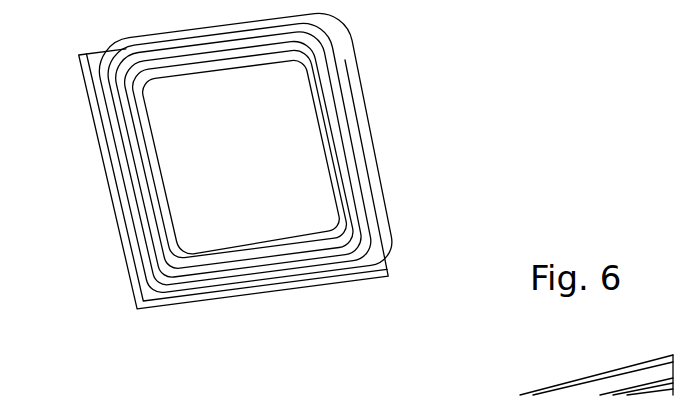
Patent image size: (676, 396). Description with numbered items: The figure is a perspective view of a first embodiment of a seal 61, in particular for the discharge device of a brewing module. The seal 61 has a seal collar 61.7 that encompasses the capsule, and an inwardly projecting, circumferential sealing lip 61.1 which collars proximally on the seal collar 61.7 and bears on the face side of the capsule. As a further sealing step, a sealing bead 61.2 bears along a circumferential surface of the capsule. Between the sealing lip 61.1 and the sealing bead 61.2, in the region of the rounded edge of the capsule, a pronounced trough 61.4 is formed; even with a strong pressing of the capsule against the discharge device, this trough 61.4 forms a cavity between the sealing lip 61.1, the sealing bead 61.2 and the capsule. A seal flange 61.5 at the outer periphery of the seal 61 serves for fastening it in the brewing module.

The seal 61 is at (381, 81).
The sealing lip 61.1 is at (202, 258).
The sealing bead 61.2 is at (340, 113).
The trough 61.4 is at (352, 218).
The seal flange 61.5 is at (384, 269).
The seal collar 61.7 is at (137, 96).